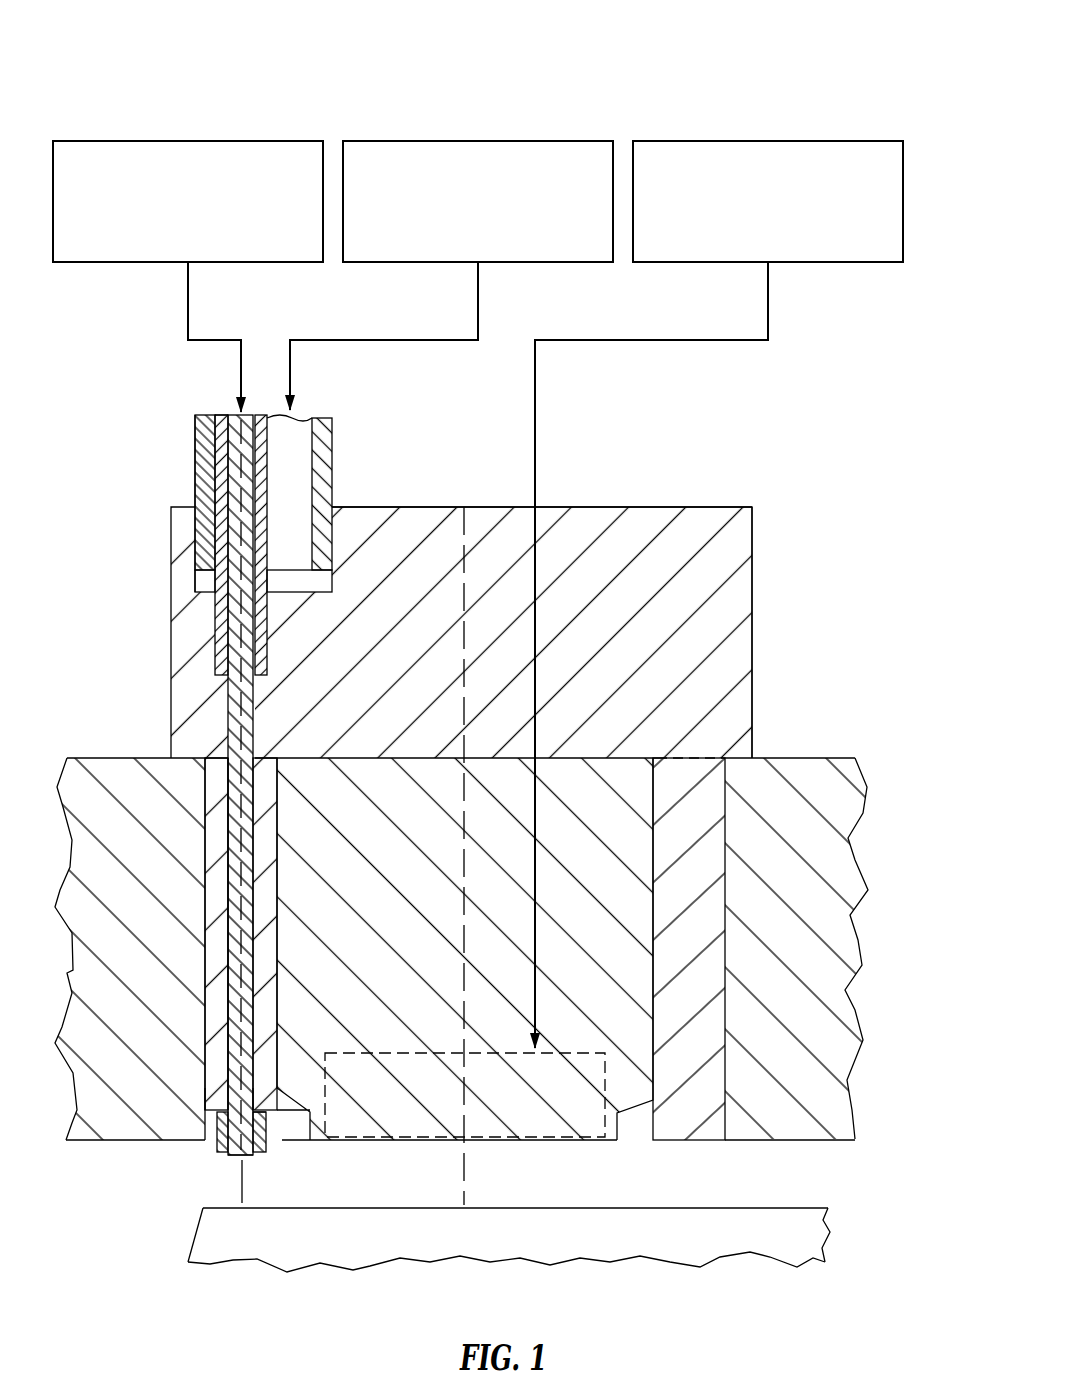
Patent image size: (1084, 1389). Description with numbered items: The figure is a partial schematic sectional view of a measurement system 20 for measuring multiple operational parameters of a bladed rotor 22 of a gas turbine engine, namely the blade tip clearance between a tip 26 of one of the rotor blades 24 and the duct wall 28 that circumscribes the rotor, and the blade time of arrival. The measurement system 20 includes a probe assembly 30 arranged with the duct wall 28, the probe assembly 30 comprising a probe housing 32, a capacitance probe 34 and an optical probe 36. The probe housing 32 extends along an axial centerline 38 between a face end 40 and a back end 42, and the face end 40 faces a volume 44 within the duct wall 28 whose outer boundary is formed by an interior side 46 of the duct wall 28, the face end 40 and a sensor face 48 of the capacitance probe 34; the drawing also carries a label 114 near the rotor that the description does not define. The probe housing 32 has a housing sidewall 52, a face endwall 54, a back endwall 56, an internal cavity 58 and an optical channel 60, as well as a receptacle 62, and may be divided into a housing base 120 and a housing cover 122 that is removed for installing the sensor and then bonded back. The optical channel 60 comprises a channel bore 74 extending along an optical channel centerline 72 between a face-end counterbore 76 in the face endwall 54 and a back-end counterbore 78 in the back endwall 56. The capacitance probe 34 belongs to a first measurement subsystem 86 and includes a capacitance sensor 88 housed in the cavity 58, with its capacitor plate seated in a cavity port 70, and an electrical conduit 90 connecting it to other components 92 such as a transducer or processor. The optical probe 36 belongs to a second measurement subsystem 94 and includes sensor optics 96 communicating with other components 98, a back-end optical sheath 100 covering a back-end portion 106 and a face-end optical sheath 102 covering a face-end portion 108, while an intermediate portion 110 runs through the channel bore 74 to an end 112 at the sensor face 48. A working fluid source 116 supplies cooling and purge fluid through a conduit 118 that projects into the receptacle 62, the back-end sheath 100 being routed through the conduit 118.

The measurement system 20 is at (814, 78).
The bladed rotor 22 is at (517, 1232).
The rotor blades 24 is at (822, 1250).
The tip 26 is at (815, 1205).
The duct wall 28 is at (502, 984).
The probe assembly 30 is at (208, 783).
The probe housing 32 is at (521, 592).
The capacitance probe 34 is at (540, 1148).
The optical probe 36 is at (222, 1166).
The axial centerline 38 is at (492, 505).
The face end 40 is at (703, 1143).
The back end 42 is at (710, 505).
The volume 44 is at (97, 1240).
The interior side 46 is at (833, 1142).
The sensor face 48 is at (360, 1146).
The housing sidewall 52 is at (742, 902).
The face endwall 54 is at (742, 1112).
The back endwall 56 is at (768, 622).
The internal cavity 58 is at (670, 826).
The optical channel 60 is at (216, 740).
The receptacle 62 is at (200, 580).
The cavity port 70 is at (640, 1140).
The optical channel centerline 72 is at (214, 690).
The channel bore 74 is at (206, 881).
The face-end counterbore 76 is at (214, 1128).
The back-end counterbore 78 is at (213, 634).
The first measurement subsystem 86 is at (705, 138).
The capacitance sensor 88 is at (432, 1146).
The electrical conduit 90 is at (537, 418).
The components of the first measurement subsystem 92 is at (783, 248).
The second measurement subsystem 94 is at (222, 138).
The sensor optics 96 is at (203, 442).
The components of the second measurement subsystem 98 is at (203, 248).
The back-end optical sheath 100 is at (218, 446).
The face-end optical sheath 102 is at (210, 1124).
The back-end portion 106 is at (205, 470).
The face-end portion 108 is at (220, 1142).
The intermediate portion 110 is at (227, 952).
The end 112 is at (250, 1158).
The workpiece edge 114 is at (195, 1240).
The working fluid source 116 is at (499, 232).
The conduit 118 is at (336, 440).
The housing base 120 is at (745, 797).
The housing cover 122 is at (768, 682).